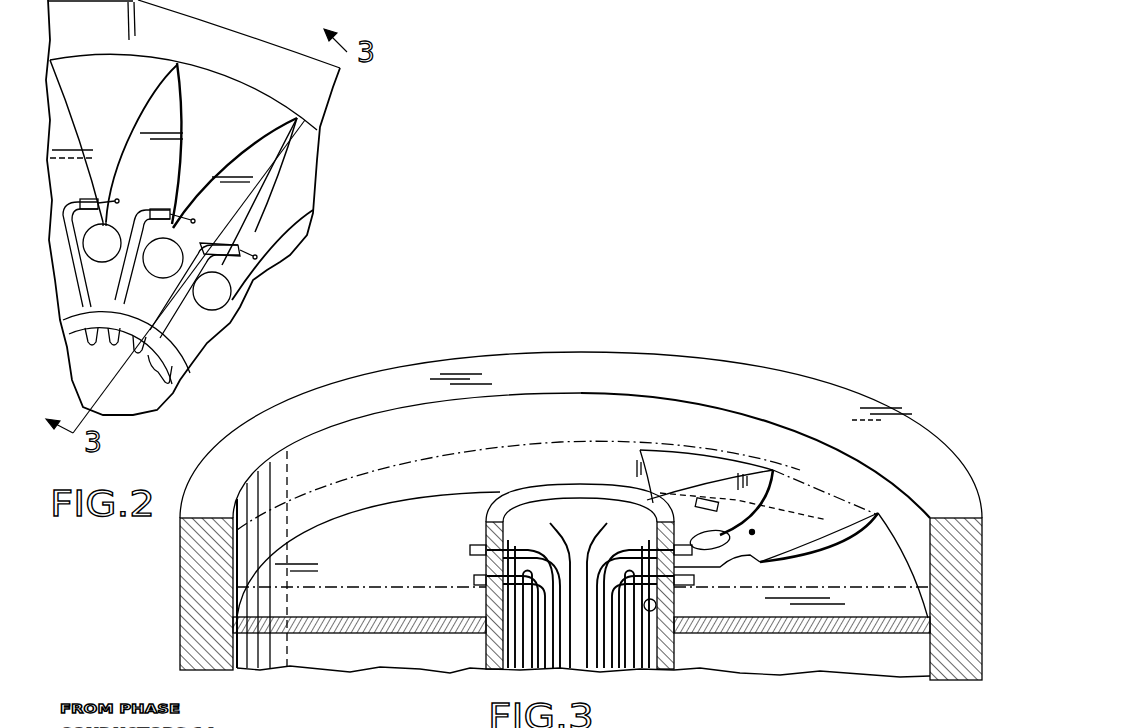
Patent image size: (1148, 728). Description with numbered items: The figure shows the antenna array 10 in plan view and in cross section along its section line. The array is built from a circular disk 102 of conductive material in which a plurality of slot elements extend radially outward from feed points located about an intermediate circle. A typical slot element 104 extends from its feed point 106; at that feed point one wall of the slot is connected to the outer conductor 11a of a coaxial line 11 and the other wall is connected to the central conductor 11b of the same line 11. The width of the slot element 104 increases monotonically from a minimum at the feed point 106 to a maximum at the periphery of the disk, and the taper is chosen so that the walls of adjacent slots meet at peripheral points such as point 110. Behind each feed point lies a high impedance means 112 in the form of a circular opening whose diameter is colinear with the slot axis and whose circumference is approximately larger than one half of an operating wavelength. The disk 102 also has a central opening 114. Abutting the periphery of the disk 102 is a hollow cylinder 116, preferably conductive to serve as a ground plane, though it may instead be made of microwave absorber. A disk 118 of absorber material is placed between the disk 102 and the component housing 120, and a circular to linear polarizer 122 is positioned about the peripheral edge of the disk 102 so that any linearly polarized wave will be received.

In FIG. 2, the antenna array 10 is at (135, 399).
In FIG. 3, the antenna array 10 is at (846, 661).
In FIG. 2, the coaxial line 11 is at (73, 337).
In FIG. 3, the coaxial line 11 is at (604, 533).
In FIG. 2, the outer conductor 11a is at (153, 210).
In FIG. 3, the outer conductor 11a is at (706, 500).
In FIG. 2, the central conductor 11b is at (200, 214).
In FIG. 3, the central conductor 11b is at (753, 530).
In FIG. 2, the circular disk 102 is at (143, 118).
In FIG. 3, the circular disk 102 is at (441, 453).
In FIG. 2, the slot element 104 is at (199, 162).
In FIG. 2, the feed point 106 is at (213, 311).
In FIG. 2, the peripheral point 110 is at (52, 58).
In FIG. 3, the peripheral point 110 is at (895, 520).
In FIG. 2, the high impedance means 112 is at (102, 262).
In FIG. 2, the central opening 114 is at (175, 387).
In FIG. 3, the central opening 114 is at (677, 648).
In FIG. 2, the hollow cylinder 116 is at (193, 362).
In FIG. 3, the hollow cylinder 116 is at (485, 536).
In FIG. 2, the absorber disk 118 is at (222, 88).
In FIG. 3, the absorber disk 118 is at (347, 558).
In FIG. 3, the component housing 120 is at (320, 655).
In FIG. 3, the circular to linear polarizer 122 is at (190, 618).